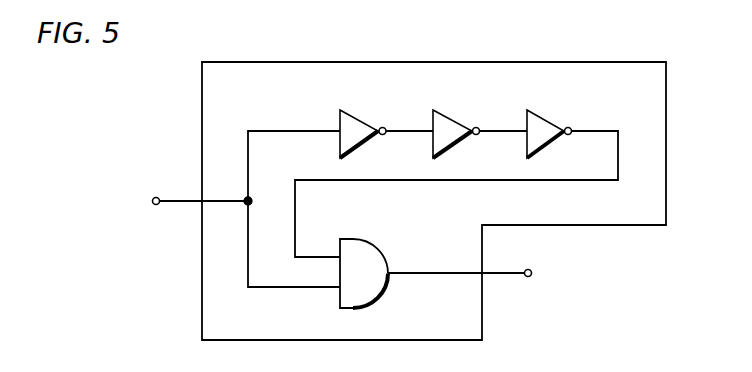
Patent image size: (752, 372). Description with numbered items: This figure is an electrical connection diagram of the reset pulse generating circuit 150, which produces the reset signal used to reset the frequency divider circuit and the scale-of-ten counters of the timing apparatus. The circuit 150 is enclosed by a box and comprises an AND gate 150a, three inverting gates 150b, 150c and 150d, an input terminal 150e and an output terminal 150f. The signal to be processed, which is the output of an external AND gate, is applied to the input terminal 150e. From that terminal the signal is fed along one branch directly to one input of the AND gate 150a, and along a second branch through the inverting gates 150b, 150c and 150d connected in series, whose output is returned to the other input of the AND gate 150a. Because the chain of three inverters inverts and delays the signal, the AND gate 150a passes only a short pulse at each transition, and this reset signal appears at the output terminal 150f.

The reset pulse generating circuit 150 is at (647, 33).
The AND gate 150a is at (390, 251).
The inverting gate 150b is at (346, 112).
The inverting gate 150c is at (455, 95).
The inverting gate 150d is at (560, 95).
The input terminal 150e is at (157, 197).
The output terminal 150f is at (534, 249).